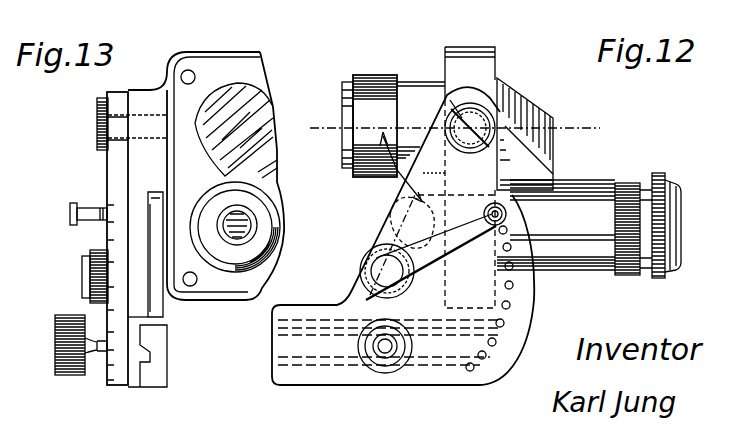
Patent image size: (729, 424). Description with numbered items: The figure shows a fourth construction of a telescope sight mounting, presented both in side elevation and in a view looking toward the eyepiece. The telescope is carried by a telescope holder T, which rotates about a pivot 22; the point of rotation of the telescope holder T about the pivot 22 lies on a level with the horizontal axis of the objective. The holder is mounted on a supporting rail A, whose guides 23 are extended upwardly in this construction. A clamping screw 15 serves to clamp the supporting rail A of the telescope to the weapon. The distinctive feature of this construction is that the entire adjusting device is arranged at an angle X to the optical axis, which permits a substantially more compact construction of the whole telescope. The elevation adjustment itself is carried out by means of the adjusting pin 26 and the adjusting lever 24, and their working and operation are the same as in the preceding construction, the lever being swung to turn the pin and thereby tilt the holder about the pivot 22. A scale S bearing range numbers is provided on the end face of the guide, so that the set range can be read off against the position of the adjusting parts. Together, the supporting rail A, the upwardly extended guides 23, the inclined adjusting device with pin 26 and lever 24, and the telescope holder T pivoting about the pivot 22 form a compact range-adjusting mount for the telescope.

In FIG. 13, the clamping screw 15 is at (55, 346).
In FIG. 13, the pivot 22 is at (97, 110).
In FIG. 12, the pivot 22 is at (478, 110).
In FIG. 13, the guides 23 is at (118, 163).
In FIG. 12, the guides 23 is at (381, 208).
In FIG. 13, the adjusting lever 24 is at (100, 233).
In FIG. 12, the adjusting lever 24 is at (462, 243).
In FIG. 13, the adjusting pin 26 is at (82, 276).
In FIG. 12, the adjusting pin 26 is at (372, 262).
In FIG. 13, the telescope holder T is at (250, 68).
In FIG. 12, the telescope holder T is at (468, 60).
In FIG. 13, the supporting rail A is at (167, 372).
In FIG. 12, the supporting rail A is at (347, 377).
In FIG. 13, the scale S is at (110, 370).
In FIG. 12, the angle X is at (412, 167).